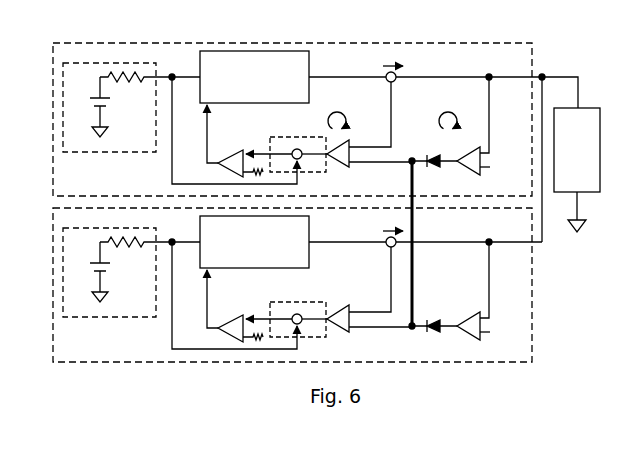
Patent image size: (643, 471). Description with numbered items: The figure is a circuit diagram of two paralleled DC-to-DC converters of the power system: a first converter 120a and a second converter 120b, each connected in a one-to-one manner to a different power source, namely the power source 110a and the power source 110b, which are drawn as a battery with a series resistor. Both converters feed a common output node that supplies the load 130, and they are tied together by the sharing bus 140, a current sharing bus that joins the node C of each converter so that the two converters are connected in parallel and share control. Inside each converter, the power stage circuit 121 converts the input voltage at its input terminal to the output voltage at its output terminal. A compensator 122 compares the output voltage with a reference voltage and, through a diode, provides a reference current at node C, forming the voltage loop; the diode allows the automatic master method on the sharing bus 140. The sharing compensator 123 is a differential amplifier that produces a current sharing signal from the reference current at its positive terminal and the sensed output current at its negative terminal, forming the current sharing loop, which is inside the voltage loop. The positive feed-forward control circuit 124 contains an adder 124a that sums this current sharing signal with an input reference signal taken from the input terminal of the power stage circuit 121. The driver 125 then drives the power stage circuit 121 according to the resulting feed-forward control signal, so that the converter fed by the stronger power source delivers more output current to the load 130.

The power source 110a is at (83, 153).
The power source 110b is at (109, 282).
The first converter 120a is at (532, 46).
The second converter 120b is at (532, 293).
The power stage circuit 121 is at (258, 51).
The compensator 122 is at (478, 175).
The sharing compensator 123 is at (349, 166).
The positive feed-forward control circuit 124 is at (299, 154).
The adder 124a is at (293, 150).
The driver 125 is at (242, 149).
The load 130 is at (592, 108).
The sharing bus 140 is at (414, 187).